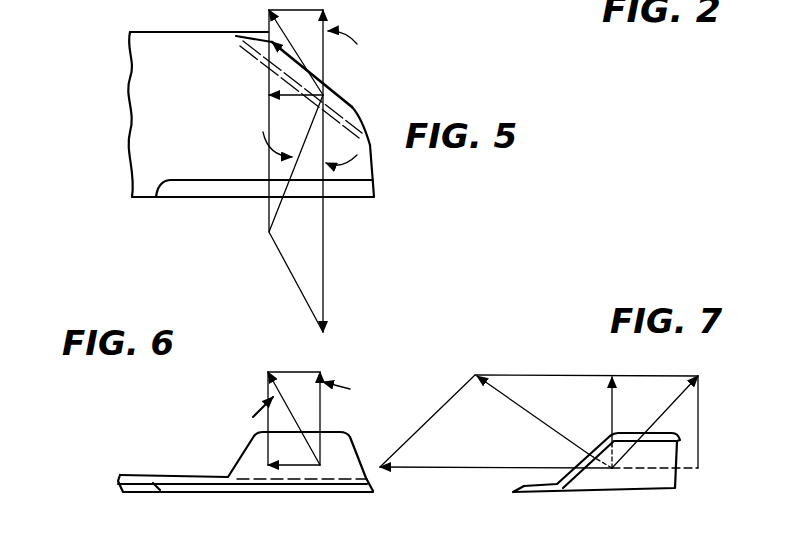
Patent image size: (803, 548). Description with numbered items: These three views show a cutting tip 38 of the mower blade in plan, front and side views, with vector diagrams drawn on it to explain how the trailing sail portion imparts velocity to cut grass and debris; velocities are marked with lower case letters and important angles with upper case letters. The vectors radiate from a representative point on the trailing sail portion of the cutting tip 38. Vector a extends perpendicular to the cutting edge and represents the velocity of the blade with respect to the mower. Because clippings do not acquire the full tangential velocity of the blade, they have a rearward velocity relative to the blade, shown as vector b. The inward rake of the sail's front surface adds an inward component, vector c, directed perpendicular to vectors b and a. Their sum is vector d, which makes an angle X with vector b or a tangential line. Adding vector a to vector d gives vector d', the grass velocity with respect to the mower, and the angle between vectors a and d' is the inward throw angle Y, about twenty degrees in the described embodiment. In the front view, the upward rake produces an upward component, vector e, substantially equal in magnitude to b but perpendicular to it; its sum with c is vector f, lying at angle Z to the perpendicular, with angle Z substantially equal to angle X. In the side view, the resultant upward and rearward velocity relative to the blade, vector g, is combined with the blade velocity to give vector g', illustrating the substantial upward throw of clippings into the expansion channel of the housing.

In FIG. 5, the cutting tip 38 is at (136, 140).
In FIG. 6, the cutting tip 38 is at (144, 480).
In FIG. 7, the cutting tip 38 is at (683, 489).
In FIG. 5, the vector a is at (324, 243).
In FIG. 7, the vector a is at (482, 472).
In FIG. 5, the vector b is at (325, 53).
In FIG. 7, the vector b is at (684, 468).
In FIG. 5, the vector c is at (292, 100).
In FIG. 6, the vector c is at (293, 468).
In FIG. 5, the vector d is at (278, 53).
In FIG. 5, the vector d' is at (275, 163).
In FIG. 6, the vector e is at (322, 418).
In FIG. 7, the vector e is at (610, 407).
In FIG. 6, the vector f is at (275, 398).
In FIG. 7, the vector g is at (655, 422).
In FIG. 7, the vector g' is at (544, 405).
In FIG. 5, the angle X is at (327, 38).
In FIG. 5, the angle Y is at (329, 163).
In FIG. 6, the angle Z is at (324, 391).